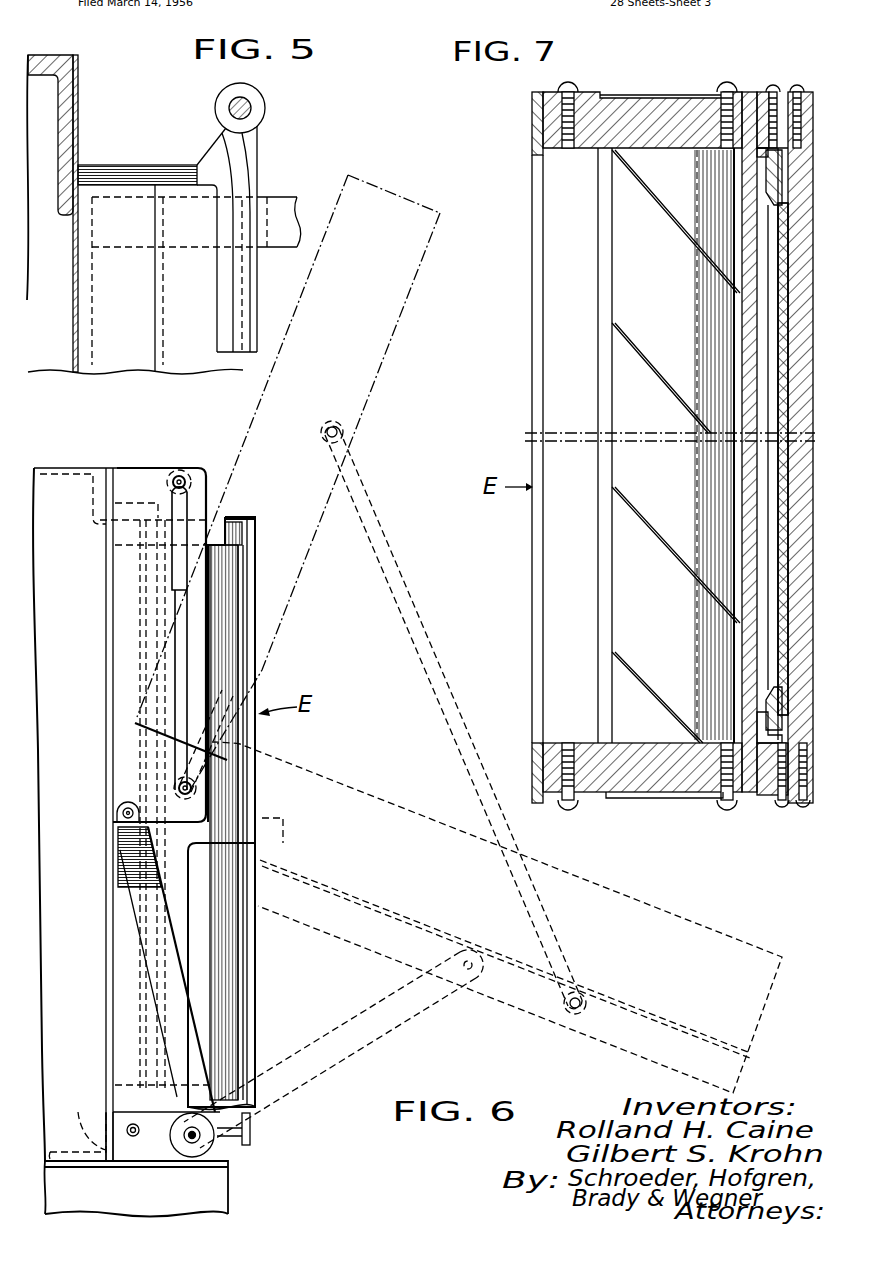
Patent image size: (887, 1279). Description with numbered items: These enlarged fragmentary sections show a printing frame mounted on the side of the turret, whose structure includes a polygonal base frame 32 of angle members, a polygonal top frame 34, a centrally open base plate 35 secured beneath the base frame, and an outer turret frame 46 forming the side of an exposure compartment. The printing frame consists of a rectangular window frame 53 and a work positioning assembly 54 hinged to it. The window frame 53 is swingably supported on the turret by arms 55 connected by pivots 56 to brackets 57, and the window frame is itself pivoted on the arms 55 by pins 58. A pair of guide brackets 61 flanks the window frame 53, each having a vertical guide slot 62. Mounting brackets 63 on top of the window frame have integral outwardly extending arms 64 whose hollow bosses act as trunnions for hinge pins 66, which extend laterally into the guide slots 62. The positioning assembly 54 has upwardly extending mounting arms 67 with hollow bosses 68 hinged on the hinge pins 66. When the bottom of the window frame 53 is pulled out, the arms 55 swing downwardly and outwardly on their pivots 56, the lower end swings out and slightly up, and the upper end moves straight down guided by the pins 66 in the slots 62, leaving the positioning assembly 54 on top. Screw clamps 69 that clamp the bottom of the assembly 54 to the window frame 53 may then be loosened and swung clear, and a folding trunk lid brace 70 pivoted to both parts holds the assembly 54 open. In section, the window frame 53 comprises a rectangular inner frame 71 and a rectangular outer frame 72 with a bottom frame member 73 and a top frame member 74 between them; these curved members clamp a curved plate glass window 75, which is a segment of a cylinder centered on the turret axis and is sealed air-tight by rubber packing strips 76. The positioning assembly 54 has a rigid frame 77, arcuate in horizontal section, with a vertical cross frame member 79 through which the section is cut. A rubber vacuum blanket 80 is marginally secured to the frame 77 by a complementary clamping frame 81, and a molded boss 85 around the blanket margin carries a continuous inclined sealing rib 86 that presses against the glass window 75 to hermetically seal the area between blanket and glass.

In FIG. 6, the polygonal base frame 32 is at (77, 1126).
In FIG. 5, the polygonal top frame 34 is at (76, 88).
In FIG. 6, the base plate 35 is at (228, 1163).
In FIG. 5, the outer turret frame 46 is at (77, 114).
In FIG. 6, the outer turret frame 46 is at (106, 688).
In FIG. 5, the window frame 53 is at (88, 262).
In FIG. 7, the window frame 53 is at (648, 802).
In FIG. 6, the window frame 53 is at (588, 1035).
In FIG. 5, the work positioning assembly 54 is at (268, 197).
In FIG. 7, the work positioning assembly 54 is at (777, 806).
In FIG. 6, the work positioning assembly 54 is at (392, 192).
In FIG. 6, the arm 55 is at (145, 924).
In FIG. 6, the pivot 56 is at (183, 1147).
In FIG. 6, the bracket 57 is at (198, 1150).
In FIG. 6, the pin 58 is at (120, 811).
In FIG. 6, the guide bracket 61 is at (152, 468).
In FIG. 6, the vertical guide slot 62 is at (178, 633).
In FIG. 5, the mounting bracket 63 is at (100, 164).
In FIG. 5, the arm 64 is at (202, 124).
In FIG. 6, the arm 64 is at (147, 492).
In FIG. 5, the hinge pin 66 is at (252, 110).
In FIG. 6, the hinge pin 66 is at (179, 475).
In FIG. 5, the mounting arm 67 is at (248, 164).
In FIG. 5, the hollow boss 68 is at (218, 97).
In FIG. 6, the screw clamp 69 is at (252, 1132).
In FIG. 6, the folding trunk lid brace 70 is at (407, 625).
In FIG. 5, the rectangular inner frame 71 is at (83, 229).
In FIG. 7, the rectangular inner frame 71 is at (532, 123).
In FIG. 7, the rectangular outer frame 72 is at (750, 796).
In FIG. 7, the bottom frame member 73 is at (699, 797).
In FIG. 5, the top frame member 74 is at (140, 251).
In FIG. 7, the top frame member 74 is at (627, 97).
In FIG. 7, the curved plate glass window 75 is at (624, 348).
In FIG. 6, the curved plate glass window 75 is at (650, 904).
In FIG. 7, the rubber packing strip 76 is at (762, 153).
In FIG. 7, the rigid frame 77 is at (797, 89).
In FIG. 7, the vertical cross frame member 79 is at (815, 796).
In FIG. 7, the rubber vacuum blanket 80 is at (773, 521).
In FIG. 6, the rubber vacuum blanket 80 is at (227, 973).
In FIG. 7, the clamping frame 81 is at (773, 89).
In FIG. 7, the molded boss 85 is at (782, 210).
In FIG. 7, the inclined sealing rib 86 is at (772, 180).